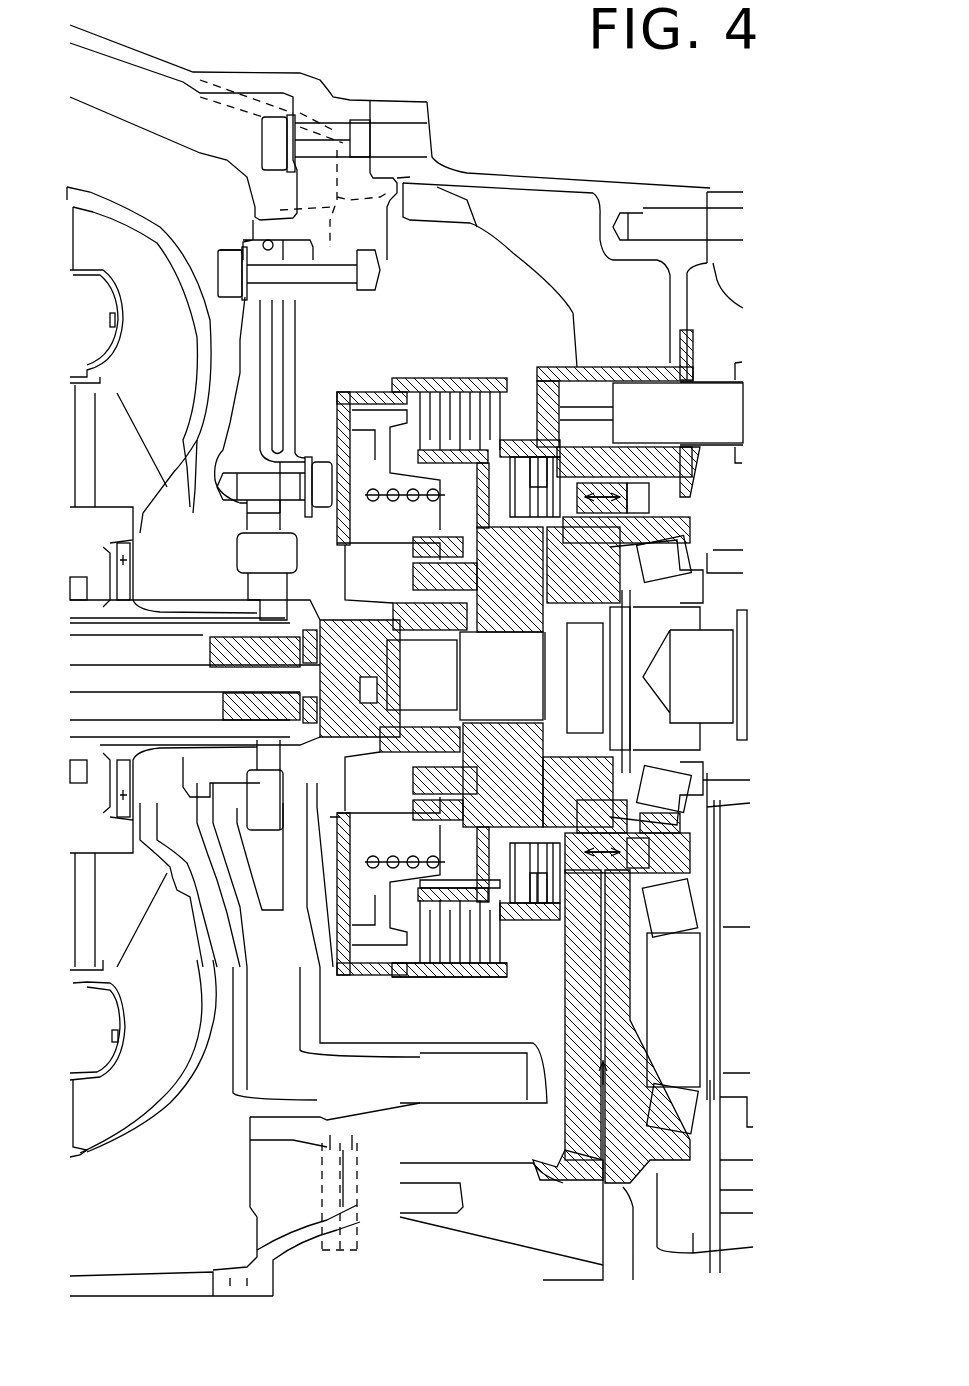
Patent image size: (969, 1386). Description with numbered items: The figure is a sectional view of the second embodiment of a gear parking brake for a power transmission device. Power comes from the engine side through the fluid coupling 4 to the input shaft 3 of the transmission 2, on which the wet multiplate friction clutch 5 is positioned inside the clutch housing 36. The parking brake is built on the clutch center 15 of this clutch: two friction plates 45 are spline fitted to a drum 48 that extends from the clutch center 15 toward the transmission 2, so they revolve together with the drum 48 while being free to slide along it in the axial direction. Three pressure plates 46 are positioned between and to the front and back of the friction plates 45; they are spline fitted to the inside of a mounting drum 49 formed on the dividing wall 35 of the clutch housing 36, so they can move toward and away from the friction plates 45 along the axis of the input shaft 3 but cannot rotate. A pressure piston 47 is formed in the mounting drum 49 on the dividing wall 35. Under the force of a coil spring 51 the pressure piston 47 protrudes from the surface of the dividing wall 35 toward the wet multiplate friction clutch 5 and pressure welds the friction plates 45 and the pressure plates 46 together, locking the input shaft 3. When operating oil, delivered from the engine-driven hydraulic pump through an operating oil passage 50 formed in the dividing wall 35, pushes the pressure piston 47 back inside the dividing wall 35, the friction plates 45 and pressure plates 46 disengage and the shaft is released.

The transmission 2 is at (728, 188).
The input shaft 3 is at (500, 686).
The fluid coupling 4 is at (150, 165).
The wet multiplate friction clutch 5 is at (415, 357).
The clutch center 15 is at (450, 970).
The dividing wall 35 is at (568, 1112).
The clutch housing 36 is at (523, 175).
The friction plates 45 is at (540, 902).
The pressure plates 46 is at (547, 462).
The pressure piston 47 is at (683, 470).
The drum 48 is at (610, 548).
The mounting drum 49 is at (483, 975).
The operating oil passage 50 is at (580, 1003).
The coil spring 51 is at (632, 497).